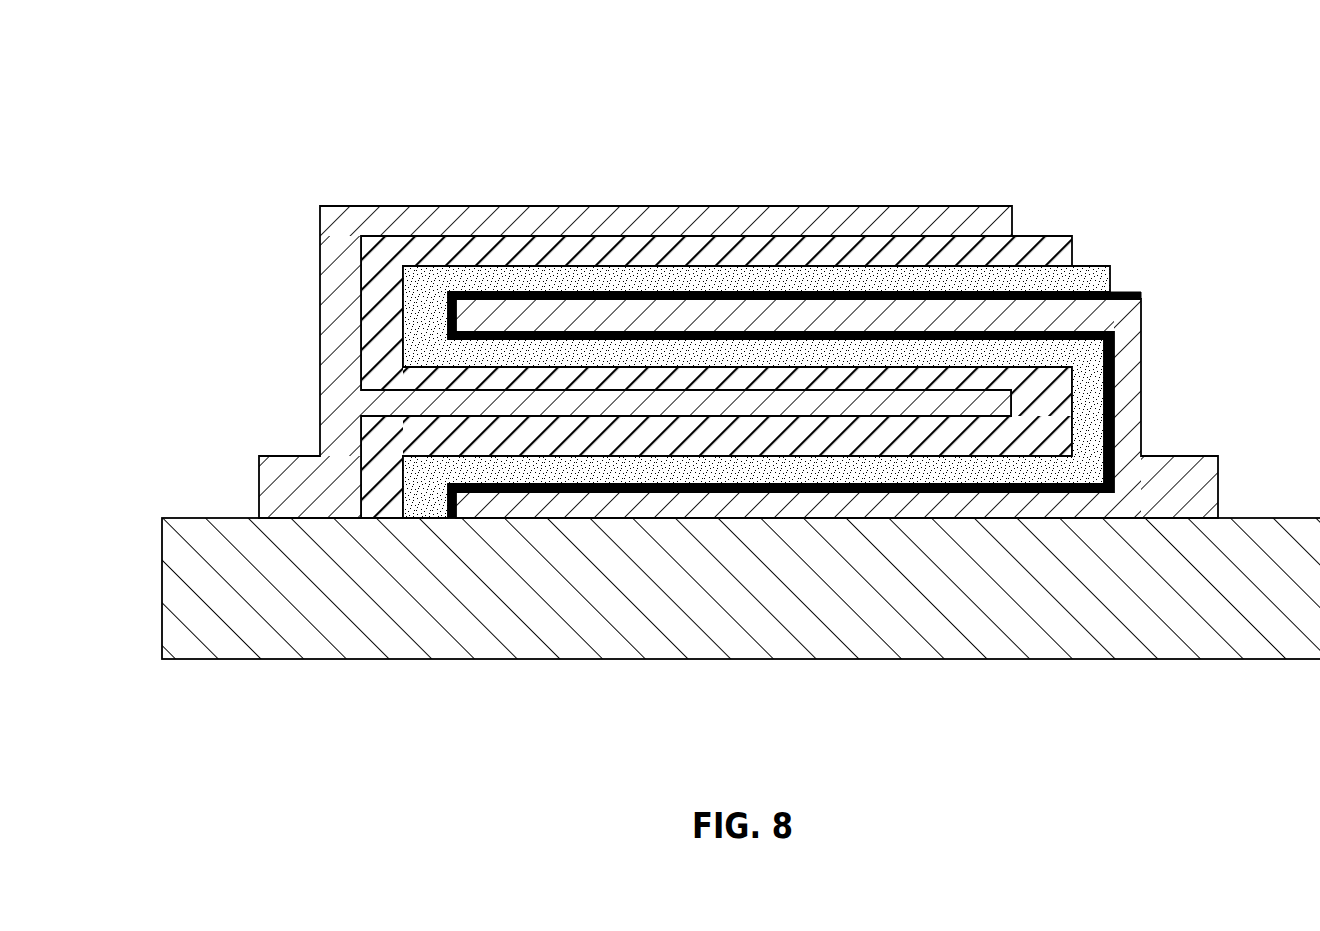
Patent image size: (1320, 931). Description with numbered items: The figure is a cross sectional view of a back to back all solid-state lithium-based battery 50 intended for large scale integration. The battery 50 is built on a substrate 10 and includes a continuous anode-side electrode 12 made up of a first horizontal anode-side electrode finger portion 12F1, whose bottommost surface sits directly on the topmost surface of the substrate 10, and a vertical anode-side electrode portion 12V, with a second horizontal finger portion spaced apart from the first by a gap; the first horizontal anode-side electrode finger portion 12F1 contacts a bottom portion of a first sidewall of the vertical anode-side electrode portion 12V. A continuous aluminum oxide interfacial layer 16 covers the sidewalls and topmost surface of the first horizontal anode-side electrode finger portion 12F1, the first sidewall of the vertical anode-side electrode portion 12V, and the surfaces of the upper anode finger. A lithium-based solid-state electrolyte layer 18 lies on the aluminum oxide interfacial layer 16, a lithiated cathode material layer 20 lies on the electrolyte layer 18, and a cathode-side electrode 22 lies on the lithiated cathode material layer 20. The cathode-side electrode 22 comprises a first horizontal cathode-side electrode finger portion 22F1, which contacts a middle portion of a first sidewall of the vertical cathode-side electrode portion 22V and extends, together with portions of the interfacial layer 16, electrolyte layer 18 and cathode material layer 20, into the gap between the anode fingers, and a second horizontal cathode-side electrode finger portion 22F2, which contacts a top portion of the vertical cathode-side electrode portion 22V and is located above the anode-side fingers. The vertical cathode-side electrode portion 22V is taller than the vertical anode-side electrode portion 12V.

The back to back all solid-state lithium-based battery 50 is at (726, 379).
The substrate 10 is at (742, 601).
The continuous anode-side electrode 12 is at (858, 433).
The vertical anode-side electrode portion 12V is at (1135, 360).
The first horizontal anode-side electrode finger portion 12F1 is at (580, 310).
The continuous aluminum oxide interfacial layer 16 is at (1133, 293).
The lithium-based solid-state electrolyte layer 18 is at (1093, 272).
The lithiated cathode material layer 20 is at (1042, 247).
The cathode-side electrode 22 is at (602, 329).
The vertical cathode-side electrode portion 22V is at (323, 330).
The first horizontal cathode-side electrode finger portion 22F1 is at (530, 403).
The second horizontal cathode-side electrode finger portion 22F2 is at (740, 215).